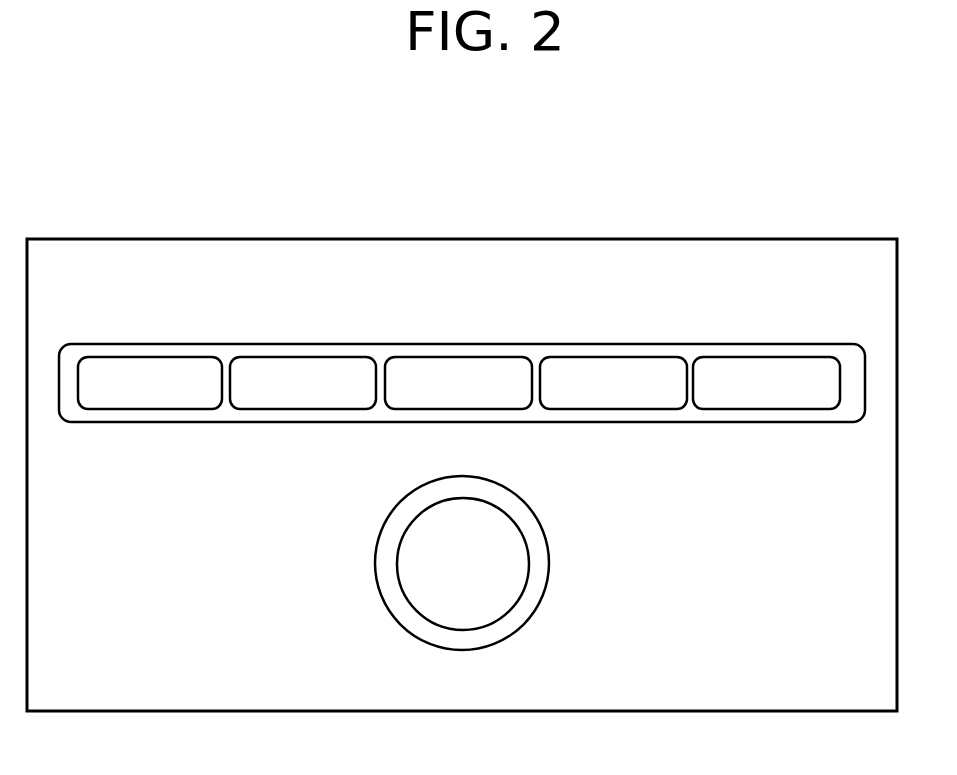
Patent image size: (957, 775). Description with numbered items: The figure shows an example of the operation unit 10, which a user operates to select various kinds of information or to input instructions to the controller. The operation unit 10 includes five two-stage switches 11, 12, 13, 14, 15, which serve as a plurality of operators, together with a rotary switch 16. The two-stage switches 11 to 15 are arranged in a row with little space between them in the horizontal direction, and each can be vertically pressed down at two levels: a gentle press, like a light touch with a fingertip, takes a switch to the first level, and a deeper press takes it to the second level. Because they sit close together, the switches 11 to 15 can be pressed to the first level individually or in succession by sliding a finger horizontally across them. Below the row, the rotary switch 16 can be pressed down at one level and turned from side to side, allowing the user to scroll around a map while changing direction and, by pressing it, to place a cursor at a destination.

The operation unit 10 is at (465, 239).
The two-stage switch 11 is at (145, 357).
The two-stage switch 12 is at (298, 357).
The two-stage switch 13 is at (455, 357).
The two-stage switch 14 is at (608, 357).
The two-stage switch 15 is at (762, 357).
The rotary switch 16 is at (549, 551).